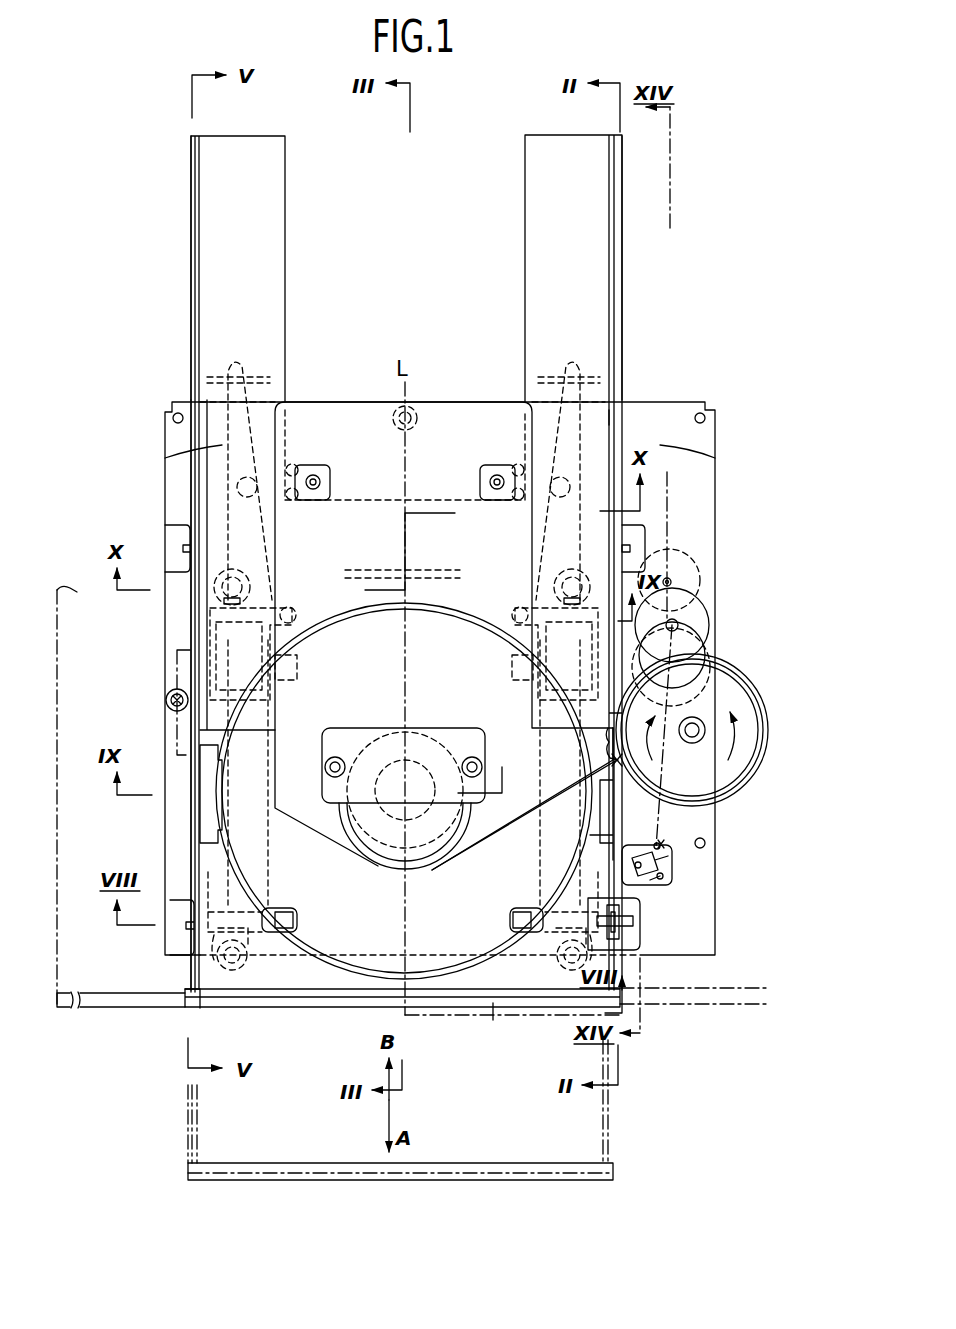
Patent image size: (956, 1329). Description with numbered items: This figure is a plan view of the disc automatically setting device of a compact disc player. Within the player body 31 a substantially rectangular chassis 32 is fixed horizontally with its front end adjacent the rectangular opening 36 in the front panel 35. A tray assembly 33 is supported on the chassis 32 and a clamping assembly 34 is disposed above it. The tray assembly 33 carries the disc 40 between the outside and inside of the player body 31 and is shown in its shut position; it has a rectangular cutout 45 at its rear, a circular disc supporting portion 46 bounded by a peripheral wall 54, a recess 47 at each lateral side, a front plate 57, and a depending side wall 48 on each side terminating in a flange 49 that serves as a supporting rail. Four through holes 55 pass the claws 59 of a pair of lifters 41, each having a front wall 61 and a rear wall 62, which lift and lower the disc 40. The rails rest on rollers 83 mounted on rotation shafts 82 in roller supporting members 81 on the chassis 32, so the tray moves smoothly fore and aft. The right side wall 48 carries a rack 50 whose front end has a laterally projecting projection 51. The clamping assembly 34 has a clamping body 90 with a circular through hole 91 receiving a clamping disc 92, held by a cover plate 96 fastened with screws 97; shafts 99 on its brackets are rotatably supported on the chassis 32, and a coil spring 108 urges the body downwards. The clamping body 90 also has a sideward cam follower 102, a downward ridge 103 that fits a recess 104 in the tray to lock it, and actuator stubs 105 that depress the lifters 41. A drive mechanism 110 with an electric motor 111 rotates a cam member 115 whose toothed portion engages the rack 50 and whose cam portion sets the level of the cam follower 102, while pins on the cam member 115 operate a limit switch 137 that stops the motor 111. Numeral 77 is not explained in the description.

The player body 31 is at (98, 1012).
The chassis 32 is at (713, 432).
The tray assembly 33 is at (326, 1008).
The clamping assembly 34 is at (352, 398).
The front panel 35 is at (165, 1006).
The rectangular opening 36 is at (198, 1000).
The disc 40 is at (190, 762).
The lifters 41 is at (272, 860).
The rectangular cutout 45 is at (286, 322).
The disc supporting portion 46 is at (484, 948).
The recess 47 is at (200, 826).
The side wall 48 is at (190, 357).
The flange 49 is at (192, 382).
The rack 50 is at (612, 420).
The projection 51 is at (627, 747).
The peripheral wall 54 is at (344, 972).
The through holes 55 is at (296, 910).
The front plate 57 is at (512, 1026).
The claws 59 is at (300, 665).
The front wall 61 is at (228, 966).
The rear wall 62 is at (232, 620).
The swing arm 77 is at (232, 447).
The roller supporting member 81 is at (170, 528).
The rotation shaft 82 is at (632, 912).
The roller 83 is at (634, 924).
The clamping body 90 is at (448, 400).
The circular through hole 91 is at (424, 852).
The clamping disc 92 is at (400, 830).
The cover plate 96 is at (436, 740).
The screws 97 is at (336, 756).
The shaft 99 is at (314, 476).
The cam follower 102 is at (622, 762).
The ridge 103 is at (410, 551).
The recess 104 is at (428, 580).
The actuator stubs 105 is at (233, 578).
The coil spring 108 is at (418, 420).
The drive mechanism 110 is at (754, 590).
The electric motor 111 is at (690, 562).
The cam member 115 is at (718, 782).
The limit switch 137 is at (672, 868).